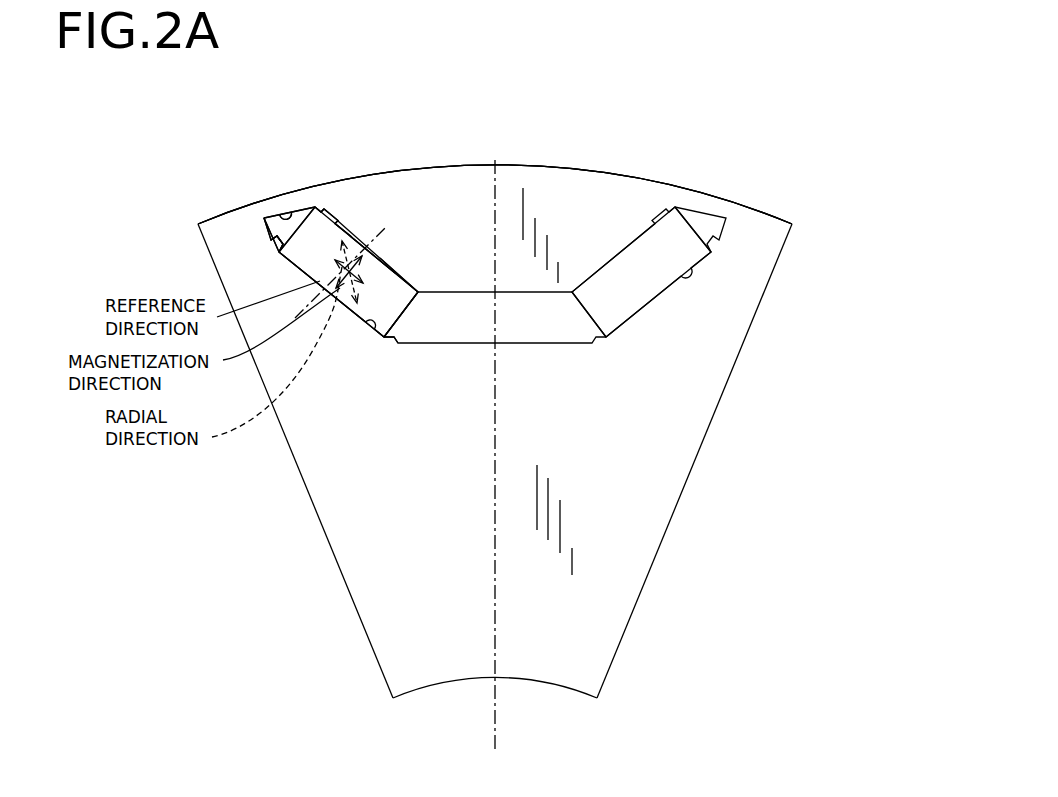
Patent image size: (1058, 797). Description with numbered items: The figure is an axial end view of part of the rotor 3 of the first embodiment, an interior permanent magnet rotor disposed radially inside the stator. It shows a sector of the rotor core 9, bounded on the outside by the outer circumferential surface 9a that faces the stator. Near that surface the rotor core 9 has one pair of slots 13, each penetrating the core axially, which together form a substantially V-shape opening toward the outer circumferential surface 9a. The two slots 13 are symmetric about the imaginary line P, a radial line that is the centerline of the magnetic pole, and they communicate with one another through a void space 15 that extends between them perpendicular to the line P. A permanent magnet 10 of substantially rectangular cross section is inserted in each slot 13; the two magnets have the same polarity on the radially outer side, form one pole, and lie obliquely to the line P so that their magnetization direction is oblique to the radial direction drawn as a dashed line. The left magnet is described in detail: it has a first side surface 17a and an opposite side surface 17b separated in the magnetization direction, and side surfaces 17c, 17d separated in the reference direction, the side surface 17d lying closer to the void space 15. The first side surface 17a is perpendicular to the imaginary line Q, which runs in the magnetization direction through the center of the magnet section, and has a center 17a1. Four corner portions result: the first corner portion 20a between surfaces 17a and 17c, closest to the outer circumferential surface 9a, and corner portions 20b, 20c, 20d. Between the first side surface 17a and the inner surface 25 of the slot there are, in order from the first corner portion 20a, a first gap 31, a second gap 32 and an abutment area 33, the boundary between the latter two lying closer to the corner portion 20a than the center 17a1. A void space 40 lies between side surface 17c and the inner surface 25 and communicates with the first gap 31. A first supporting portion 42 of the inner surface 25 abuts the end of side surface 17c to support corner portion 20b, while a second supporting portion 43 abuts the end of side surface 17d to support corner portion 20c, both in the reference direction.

The rotor 3 is at (772, 142).
The rotor core 9 is at (650, 528).
The outer circumferential surface 9a is at (638, 175).
The permanent magnet 10 is at (348, 307).
The slot 13 is at (368, 326).
The void space 15 is at (460, 328).
The first side surface 17a is at (393, 271).
The center of the first side surface 17a1 is at (372, 254).
The side surface 17b is at (282, 255).
The side surface 17c is at (282, 219).
The side surface 17d is at (424, 292).
The first corner portion 20a is at (292, 216).
The corner portion 20b is at (278, 252).
The corner portion 20c is at (383, 338).
The corner portion 20d is at (418, 290).
The inner surface of the slot 25 is at (273, 218).
The first gap 31 is at (316, 207).
The second gap 32 is at (336, 219).
The abutment area 33 is at (352, 237).
The void space 40 is at (275, 238).
The first supporting portion 42 is at (276, 240).
The second supporting portion 43 is at (393, 343).
The imaginary line P is at (497, 717).
The imaginary line Q is at (329, 288).